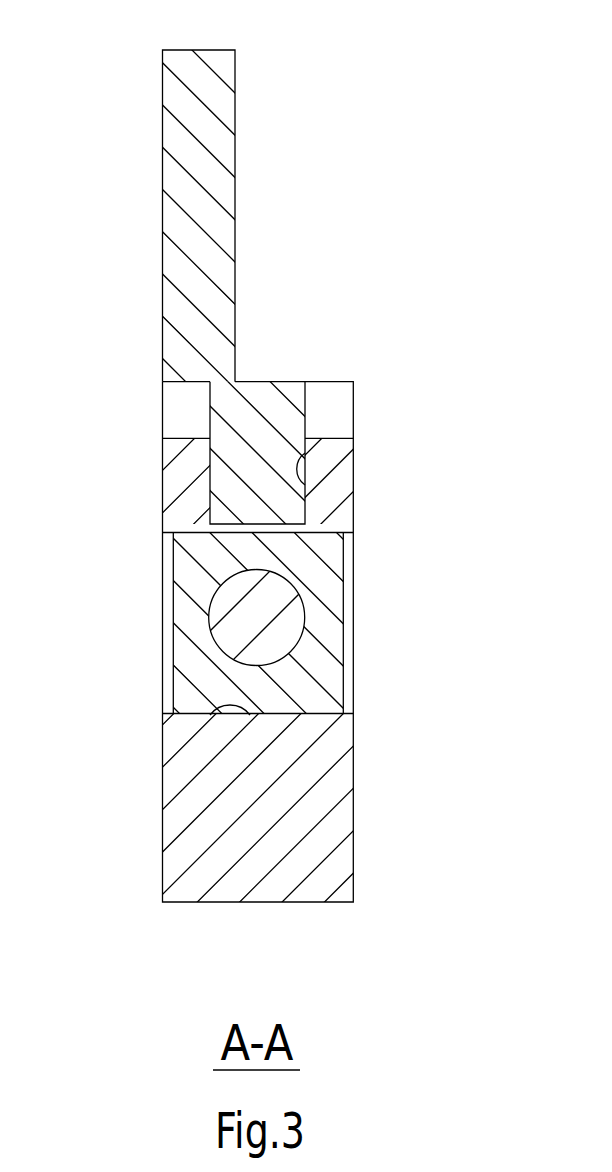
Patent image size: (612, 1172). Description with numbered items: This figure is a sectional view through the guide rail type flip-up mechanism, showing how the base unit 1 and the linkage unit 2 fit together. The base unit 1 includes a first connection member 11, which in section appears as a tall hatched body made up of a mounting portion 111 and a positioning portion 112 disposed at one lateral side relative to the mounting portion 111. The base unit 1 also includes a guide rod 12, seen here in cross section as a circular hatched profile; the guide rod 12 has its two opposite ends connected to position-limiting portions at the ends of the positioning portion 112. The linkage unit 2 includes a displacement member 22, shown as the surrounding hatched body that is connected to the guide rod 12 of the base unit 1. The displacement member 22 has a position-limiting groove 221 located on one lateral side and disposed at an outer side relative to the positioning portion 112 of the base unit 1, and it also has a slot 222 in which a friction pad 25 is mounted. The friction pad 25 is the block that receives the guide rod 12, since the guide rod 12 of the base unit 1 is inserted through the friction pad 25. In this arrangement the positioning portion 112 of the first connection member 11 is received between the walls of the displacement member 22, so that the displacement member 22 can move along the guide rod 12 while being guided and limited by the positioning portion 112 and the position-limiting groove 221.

The base unit 1 is at (135, 116).
The first connection member 11 is at (155, 74).
The mounting portion 111 is at (182, 227).
The positioning portion 112 is at (233, 498).
The guide rod 12 is at (273, 595).
The linkage unit 2 is at (360, 815).
The displacement member 22 is at (340, 783).
The position-limiting groove 221 is at (306, 455).
The slot 222 is at (212, 716).
The friction pad 25 is at (320, 663).